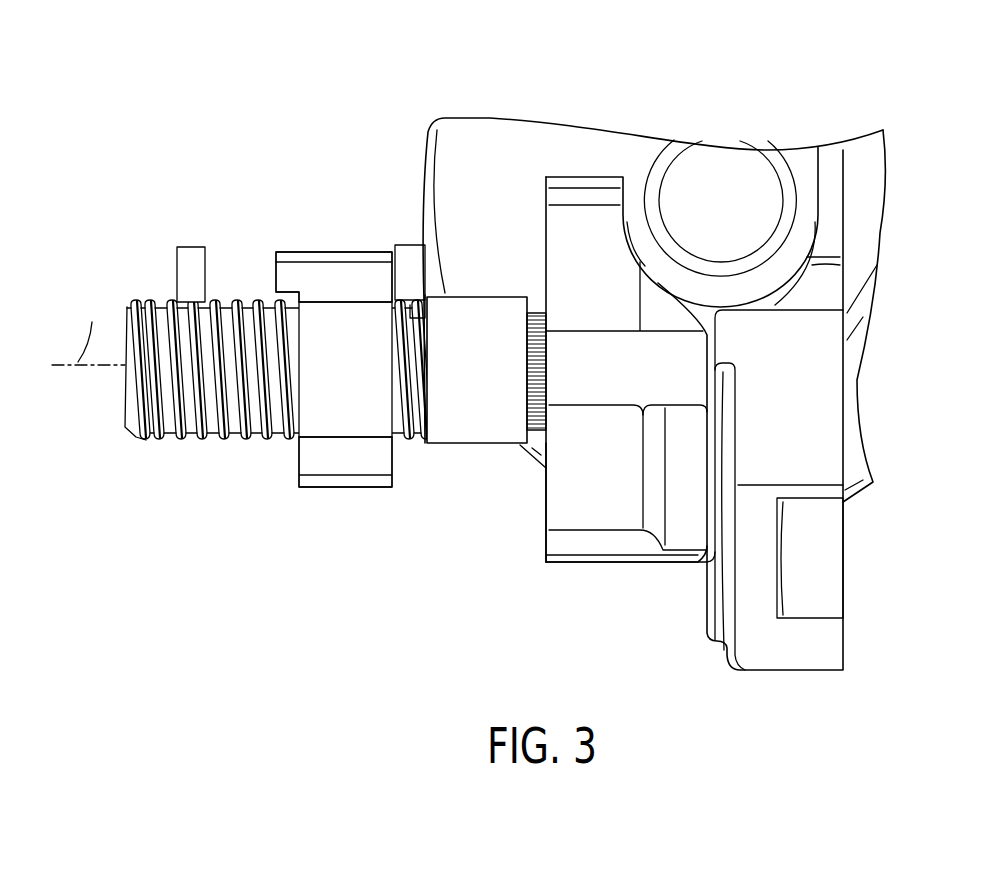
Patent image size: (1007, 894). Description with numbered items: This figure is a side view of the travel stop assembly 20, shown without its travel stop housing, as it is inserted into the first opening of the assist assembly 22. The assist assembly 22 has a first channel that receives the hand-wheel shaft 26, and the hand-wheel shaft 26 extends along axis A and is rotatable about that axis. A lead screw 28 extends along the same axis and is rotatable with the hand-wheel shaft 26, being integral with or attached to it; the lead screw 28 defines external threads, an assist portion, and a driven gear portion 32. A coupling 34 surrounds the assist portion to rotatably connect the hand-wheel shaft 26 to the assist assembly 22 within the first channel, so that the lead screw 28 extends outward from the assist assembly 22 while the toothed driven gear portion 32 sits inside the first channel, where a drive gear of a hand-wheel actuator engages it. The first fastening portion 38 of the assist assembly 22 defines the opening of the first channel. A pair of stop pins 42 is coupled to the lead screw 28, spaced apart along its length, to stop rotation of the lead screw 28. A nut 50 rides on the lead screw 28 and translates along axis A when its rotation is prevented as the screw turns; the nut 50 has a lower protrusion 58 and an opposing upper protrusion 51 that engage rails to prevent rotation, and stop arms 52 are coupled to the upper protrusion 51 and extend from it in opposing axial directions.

The travel stop assembly 20 is at (353, 105).
The assist assembly 22 is at (487, 152).
The hand-wheel shaft 26 is at (142, 457).
The lead screw 28 is at (228, 437).
The driven gear portion 32 is at (540, 310).
The coupling 34 is at (450, 305).
The first fastening portion 38 is at (553, 508).
The stop pins 42 is at (190, 256).
The nut 50 is at (342, 284).
The upper protrusion 51 is at (307, 277).
The stop arms 52 is at (283, 273).
The lower protrusion 58 is at (348, 462).